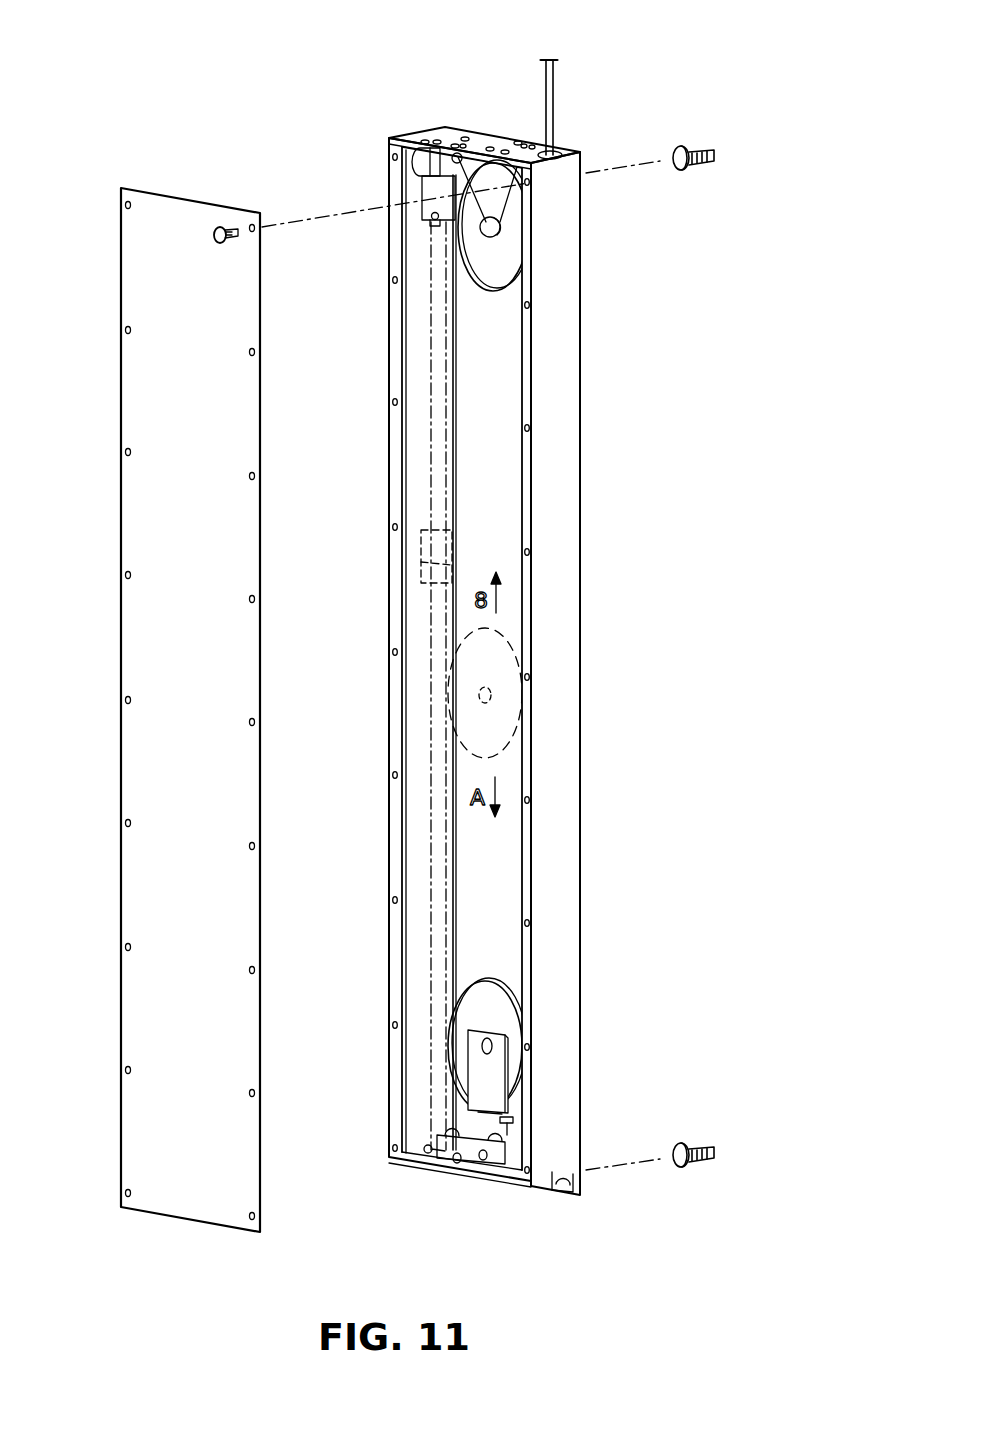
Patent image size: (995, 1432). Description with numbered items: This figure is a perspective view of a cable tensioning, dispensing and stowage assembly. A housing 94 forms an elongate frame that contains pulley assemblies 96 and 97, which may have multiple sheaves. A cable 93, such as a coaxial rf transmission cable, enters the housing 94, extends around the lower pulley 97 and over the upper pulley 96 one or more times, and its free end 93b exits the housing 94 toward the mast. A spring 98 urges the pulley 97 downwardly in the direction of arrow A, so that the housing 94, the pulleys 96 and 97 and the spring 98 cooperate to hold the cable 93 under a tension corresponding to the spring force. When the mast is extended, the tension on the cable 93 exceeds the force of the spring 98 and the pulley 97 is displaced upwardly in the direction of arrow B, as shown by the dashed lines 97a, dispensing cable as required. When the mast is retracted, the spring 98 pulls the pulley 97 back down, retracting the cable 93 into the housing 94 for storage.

The free end 93b is at (580, 34).
The cable 93 is at (553, 60).
The pulley assembly 96 is at (504, 262).
The spring 98 is at (430, 732).
The dashed lines 97a is at (500, 758).
The housing 94 is at (555, 928).
The pulley assembly 97 is at (498, 1000).